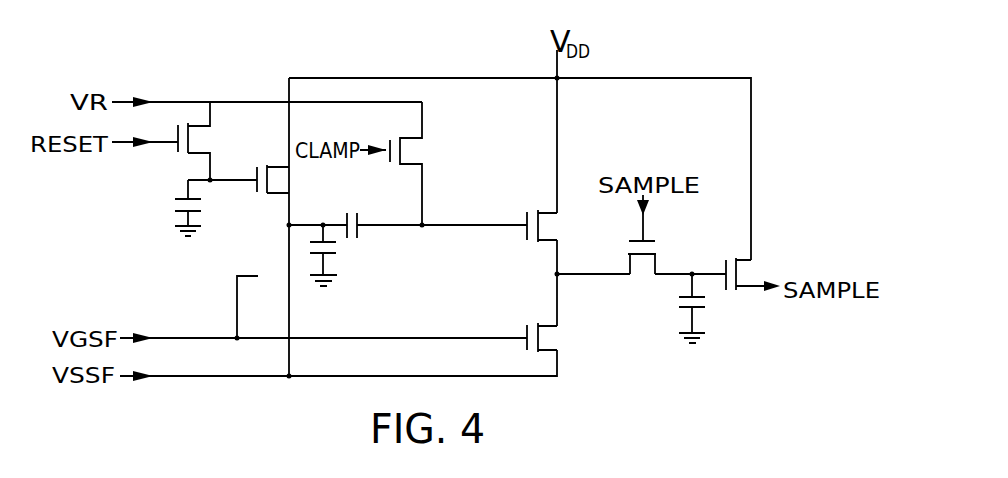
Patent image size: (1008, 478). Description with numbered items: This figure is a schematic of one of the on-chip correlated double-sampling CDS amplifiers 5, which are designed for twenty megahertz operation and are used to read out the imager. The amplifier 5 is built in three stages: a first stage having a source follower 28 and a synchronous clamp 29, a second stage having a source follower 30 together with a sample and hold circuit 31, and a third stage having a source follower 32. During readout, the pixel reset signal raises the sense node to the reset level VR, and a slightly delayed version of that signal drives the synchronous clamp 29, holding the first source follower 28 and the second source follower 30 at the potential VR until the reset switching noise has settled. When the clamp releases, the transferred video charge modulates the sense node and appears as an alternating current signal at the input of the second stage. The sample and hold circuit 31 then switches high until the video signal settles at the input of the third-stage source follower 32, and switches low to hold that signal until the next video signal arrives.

The CDS amplifier 5 is at (777, 102).
The first-stage source follower 28 is at (216, 236).
The synchronous clamp 29 is at (455, 153).
The second-stage source follower 30 is at (580, 340).
The sample and hold circuit 31 is at (648, 302).
The third-stage source follower 32 is at (734, 305).